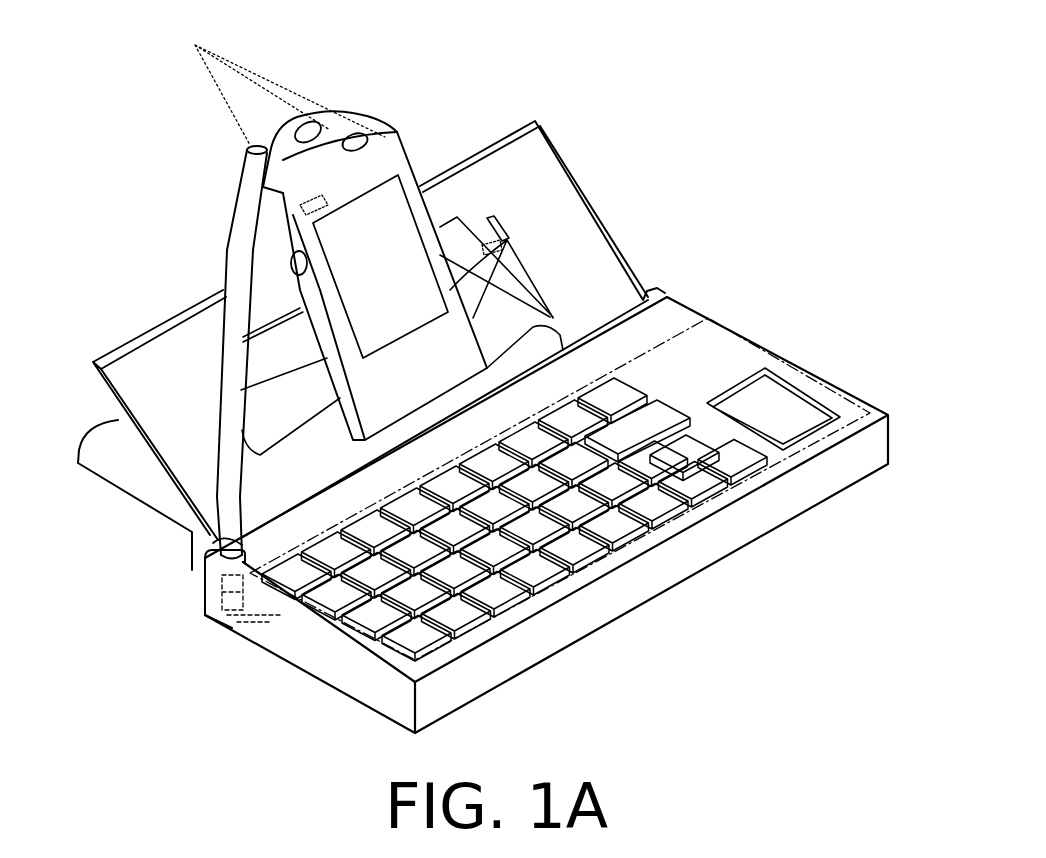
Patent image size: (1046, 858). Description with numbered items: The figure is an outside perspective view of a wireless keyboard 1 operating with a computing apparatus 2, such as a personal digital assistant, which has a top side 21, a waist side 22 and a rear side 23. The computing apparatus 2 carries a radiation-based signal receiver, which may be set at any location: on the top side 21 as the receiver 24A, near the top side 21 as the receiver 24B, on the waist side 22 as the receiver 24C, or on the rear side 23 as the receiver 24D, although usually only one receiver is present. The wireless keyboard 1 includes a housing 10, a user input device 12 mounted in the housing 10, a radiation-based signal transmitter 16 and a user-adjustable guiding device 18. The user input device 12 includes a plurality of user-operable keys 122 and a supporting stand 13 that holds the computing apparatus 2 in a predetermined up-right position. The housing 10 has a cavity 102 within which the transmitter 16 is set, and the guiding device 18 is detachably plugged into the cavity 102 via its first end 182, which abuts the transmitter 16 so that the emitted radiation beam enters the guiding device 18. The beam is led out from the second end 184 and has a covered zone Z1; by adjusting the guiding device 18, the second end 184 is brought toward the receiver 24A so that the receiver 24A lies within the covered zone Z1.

The wireless keyboard 1 is at (706, 300).
The housing 10 is at (316, 648).
The cavity 102 is at (203, 570).
The user input device 12 is at (800, 353).
The user-operable keys 122 is at (622, 386).
The supporting stand 13 is at (547, 200).
The radiation-based signal transmitter 16 is at (205, 612).
The user-adjustable guiding device 18 is at (232, 334).
The first end 182 is at (195, 530).
The second end 184 is at (247, 152).
The computing apparatus 2 is at (426, 72).
The top side 21 is at (335, 123).
The waist side 22 is at (307, 292).
The rear side 23 is at (267, 213).
The radiation-based signal receiver 24A is at (307, 132).
The radiation-based signal receiver 24B is at (365, 139).
The radiation-based signal receiver 24C is at (287, 264).
The radiation-based signal receiver 24D is at (300, 213).
The covered zone Z1 is at (213, 93).